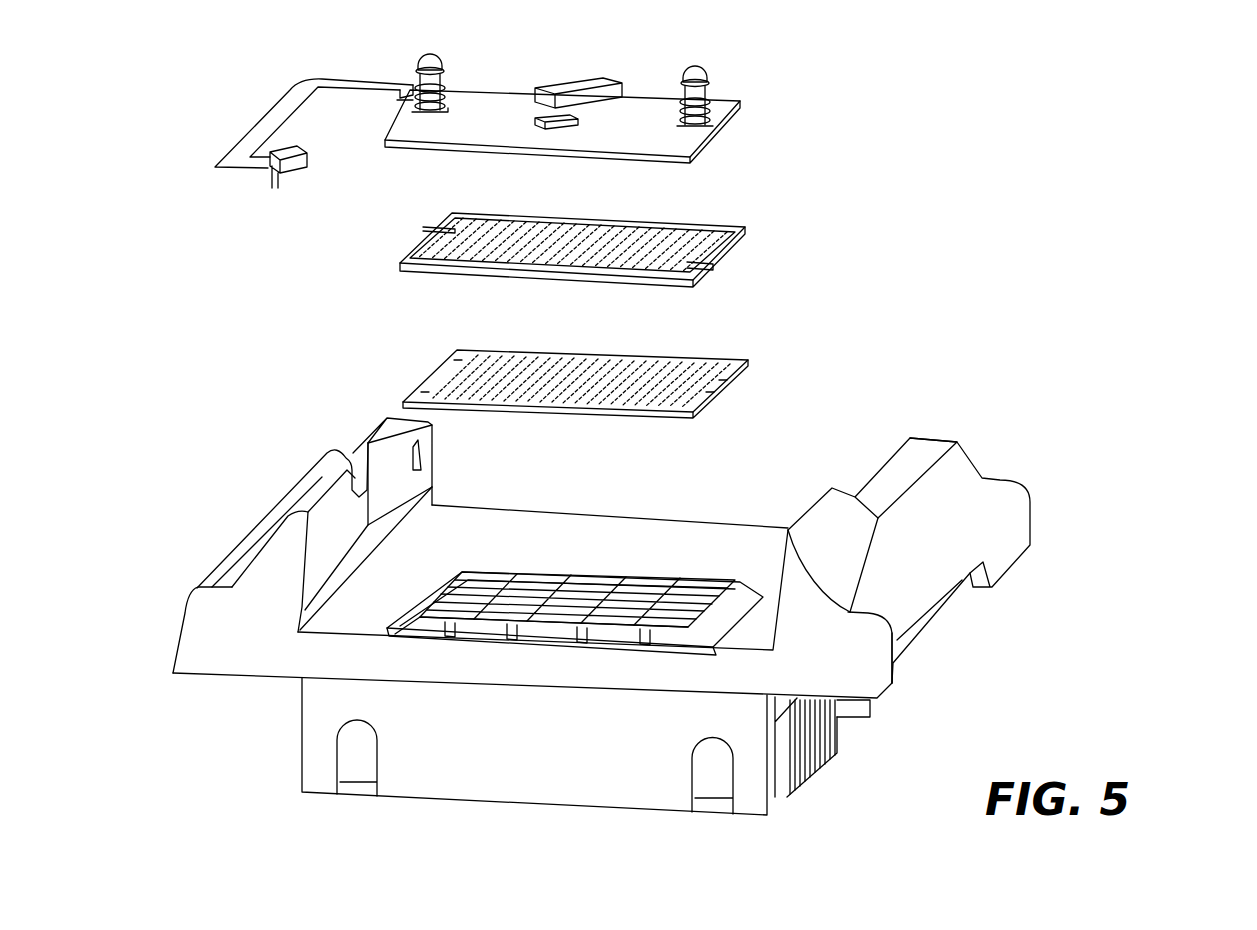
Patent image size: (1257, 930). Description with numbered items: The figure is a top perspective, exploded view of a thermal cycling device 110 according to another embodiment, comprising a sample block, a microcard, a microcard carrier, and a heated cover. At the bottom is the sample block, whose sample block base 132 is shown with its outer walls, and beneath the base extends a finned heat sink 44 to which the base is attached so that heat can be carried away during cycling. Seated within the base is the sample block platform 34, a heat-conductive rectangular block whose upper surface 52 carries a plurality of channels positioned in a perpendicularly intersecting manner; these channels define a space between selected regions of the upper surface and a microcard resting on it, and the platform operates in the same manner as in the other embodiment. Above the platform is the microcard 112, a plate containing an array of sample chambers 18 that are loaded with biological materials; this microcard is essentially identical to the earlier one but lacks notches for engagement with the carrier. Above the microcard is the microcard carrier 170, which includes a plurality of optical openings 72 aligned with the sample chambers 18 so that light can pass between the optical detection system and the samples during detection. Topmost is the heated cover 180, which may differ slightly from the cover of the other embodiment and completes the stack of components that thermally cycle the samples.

The thermal cycling device 110 is at (1104, 111).
The heated cover 180 is at (756, 108).
The microcard carrier 170 is at (621, 234).
The optical openings 72 is at (637, 232).
The microcard 112 is at (623, 394).
The sample chambers 18 is at (705, 400).
The sample block base 132 is at (636, 616).
The sample block platform 34 is at (581, 589).
The upper surface 52 is at (662, 582).
The finned heat sink 44 is at (820, 768).